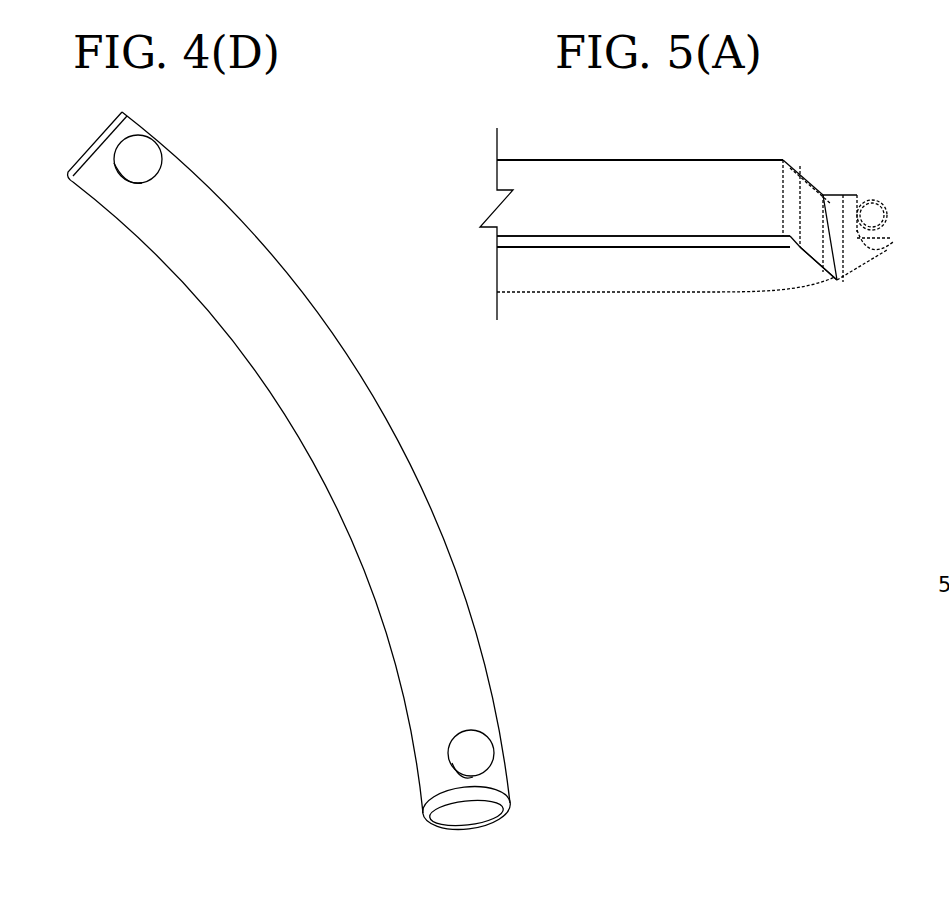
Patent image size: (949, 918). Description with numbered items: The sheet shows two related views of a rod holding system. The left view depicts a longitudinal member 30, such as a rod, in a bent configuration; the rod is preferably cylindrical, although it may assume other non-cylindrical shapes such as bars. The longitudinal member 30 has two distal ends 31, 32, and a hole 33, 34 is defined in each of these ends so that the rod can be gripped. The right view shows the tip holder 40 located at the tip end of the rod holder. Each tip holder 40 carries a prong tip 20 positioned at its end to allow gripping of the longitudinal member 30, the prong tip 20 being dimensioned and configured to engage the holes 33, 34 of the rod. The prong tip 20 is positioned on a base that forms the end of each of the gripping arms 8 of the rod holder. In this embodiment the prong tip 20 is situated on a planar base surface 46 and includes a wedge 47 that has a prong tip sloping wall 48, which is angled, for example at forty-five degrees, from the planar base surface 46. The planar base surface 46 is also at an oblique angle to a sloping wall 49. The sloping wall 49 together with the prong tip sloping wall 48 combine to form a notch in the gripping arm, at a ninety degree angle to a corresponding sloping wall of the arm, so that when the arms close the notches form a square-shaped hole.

The longitudinal member 30 is at (343, 477).
The distal end 31 is at (93, 203).
The distal end 32 is at (417, 768).
The hole 33 is at (143, 157).
The hole 34 is at (475, 753).
The gripping arm 8 is at (743, 268).
The tip holder 40 is at (655, 293).
The prong tip 20 is at (873, 197).
The planar base surface 46 is at (857, 243).
The wedge 47 is at (882, 224).
The prong tip sloping wall 48 is at (866, 210).
The sloping wall 49 is at (836, 272).